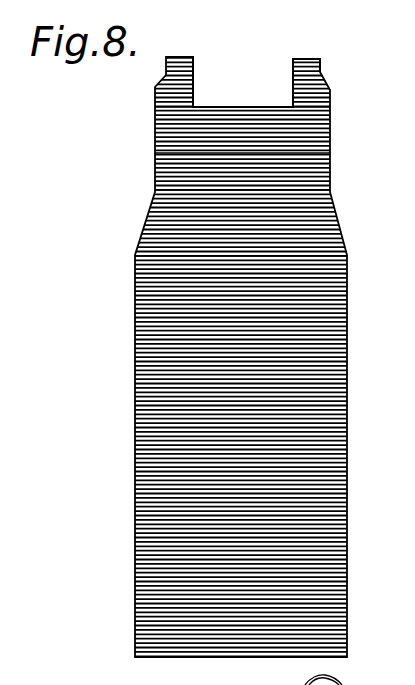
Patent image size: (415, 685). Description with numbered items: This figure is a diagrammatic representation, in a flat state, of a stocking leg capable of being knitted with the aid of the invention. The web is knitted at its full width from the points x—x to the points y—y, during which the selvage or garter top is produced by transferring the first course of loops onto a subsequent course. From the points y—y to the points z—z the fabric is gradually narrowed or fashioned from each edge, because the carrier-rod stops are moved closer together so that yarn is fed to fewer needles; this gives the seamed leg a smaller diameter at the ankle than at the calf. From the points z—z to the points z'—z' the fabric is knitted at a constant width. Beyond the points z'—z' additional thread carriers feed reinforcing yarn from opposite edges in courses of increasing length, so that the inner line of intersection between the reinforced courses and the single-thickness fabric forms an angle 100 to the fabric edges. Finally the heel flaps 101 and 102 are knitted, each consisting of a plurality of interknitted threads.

The angle 100 is at (197, 128).
The heel flap 101 is at (193, 73).
The heel flap 102 is at (293, 66).
The points X—X x is at (234, 655).
The points Y—Y y is at (135, 257).
The points Z—Z z is at (237, 188).
The points Z′—Z′ z' is at (240, 151).